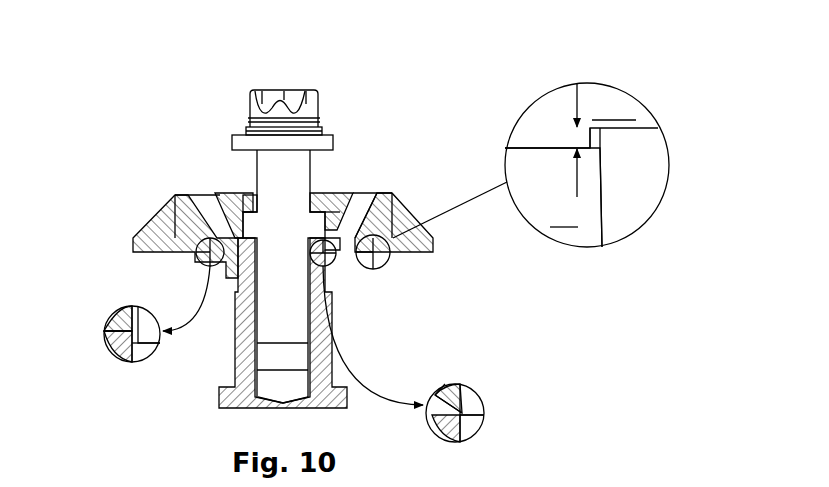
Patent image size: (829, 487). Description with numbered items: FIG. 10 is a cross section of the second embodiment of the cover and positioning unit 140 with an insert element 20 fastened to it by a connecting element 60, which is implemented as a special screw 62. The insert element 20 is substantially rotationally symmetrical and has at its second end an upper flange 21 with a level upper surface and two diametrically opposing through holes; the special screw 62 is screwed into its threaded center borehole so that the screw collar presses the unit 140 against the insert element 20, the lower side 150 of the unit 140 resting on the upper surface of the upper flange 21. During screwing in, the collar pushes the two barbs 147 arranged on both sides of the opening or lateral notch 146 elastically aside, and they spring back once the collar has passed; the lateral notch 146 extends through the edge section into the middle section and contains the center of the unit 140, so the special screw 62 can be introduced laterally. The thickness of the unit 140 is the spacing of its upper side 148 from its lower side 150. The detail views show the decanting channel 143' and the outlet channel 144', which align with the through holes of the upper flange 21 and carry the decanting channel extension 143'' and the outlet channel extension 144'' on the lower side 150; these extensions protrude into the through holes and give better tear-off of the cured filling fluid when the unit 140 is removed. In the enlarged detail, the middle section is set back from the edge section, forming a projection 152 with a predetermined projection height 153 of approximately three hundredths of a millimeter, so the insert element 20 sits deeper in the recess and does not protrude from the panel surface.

The connecting element 60 is at (316, 76).
The special screw 62 is at (338, 156).
The insert element 20 is at (221, 153).
The cover and positioning unit 140 is at (131, 226).
The outlet channel 144' is at (149, 267).
The outlet channel extension 144'' is at (138, 382).
The barb 147 is at (243, 200).
The upper side 148 is at (328, 193).
The decanting channel 143' is at (432, 305).
The decanting channel extension 143'' is at (503, 428).
The lateral notch 146 is at (331, 233).
The lower side 150 is at (425, 255).
The projection 152 is at (592, 135).
The projection height 153 is at (550, 135).
The upper flange 21 is at (553, 197).